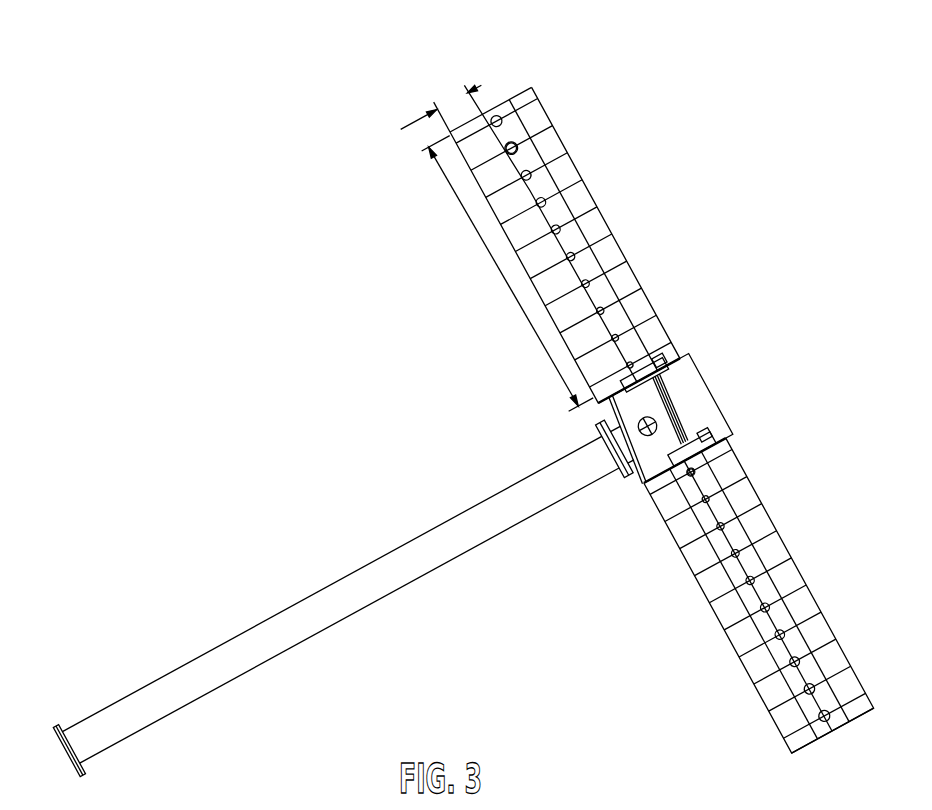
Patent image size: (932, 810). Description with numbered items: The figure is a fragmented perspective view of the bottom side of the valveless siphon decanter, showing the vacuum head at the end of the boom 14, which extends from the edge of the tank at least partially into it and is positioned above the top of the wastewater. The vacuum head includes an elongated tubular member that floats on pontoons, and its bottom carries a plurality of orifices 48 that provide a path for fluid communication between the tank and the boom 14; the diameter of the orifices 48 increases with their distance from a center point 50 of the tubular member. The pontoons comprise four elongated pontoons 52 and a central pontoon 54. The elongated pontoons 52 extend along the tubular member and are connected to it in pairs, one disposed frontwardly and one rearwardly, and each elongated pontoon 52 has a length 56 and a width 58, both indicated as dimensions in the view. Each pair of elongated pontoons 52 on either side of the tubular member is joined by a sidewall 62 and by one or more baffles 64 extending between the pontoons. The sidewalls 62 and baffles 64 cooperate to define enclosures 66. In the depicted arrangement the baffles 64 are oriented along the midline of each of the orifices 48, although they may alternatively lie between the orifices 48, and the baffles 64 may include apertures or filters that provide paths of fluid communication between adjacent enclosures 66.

The boom 14 is at (377, 601).
The orifices 48 is at (500, 124).
The center point 50 is at (659, 427).
The elongated pontoons 52 is at (583, 195).
The central pontoon 54 is at (698, 393).
The length 56 is at (483, 240).
The width 58 is at (447, 103).
The sidewall 62 is at (494, 108).
The baffles 64 is at (565, 228).
The enclosures 66 is at (513, 151).